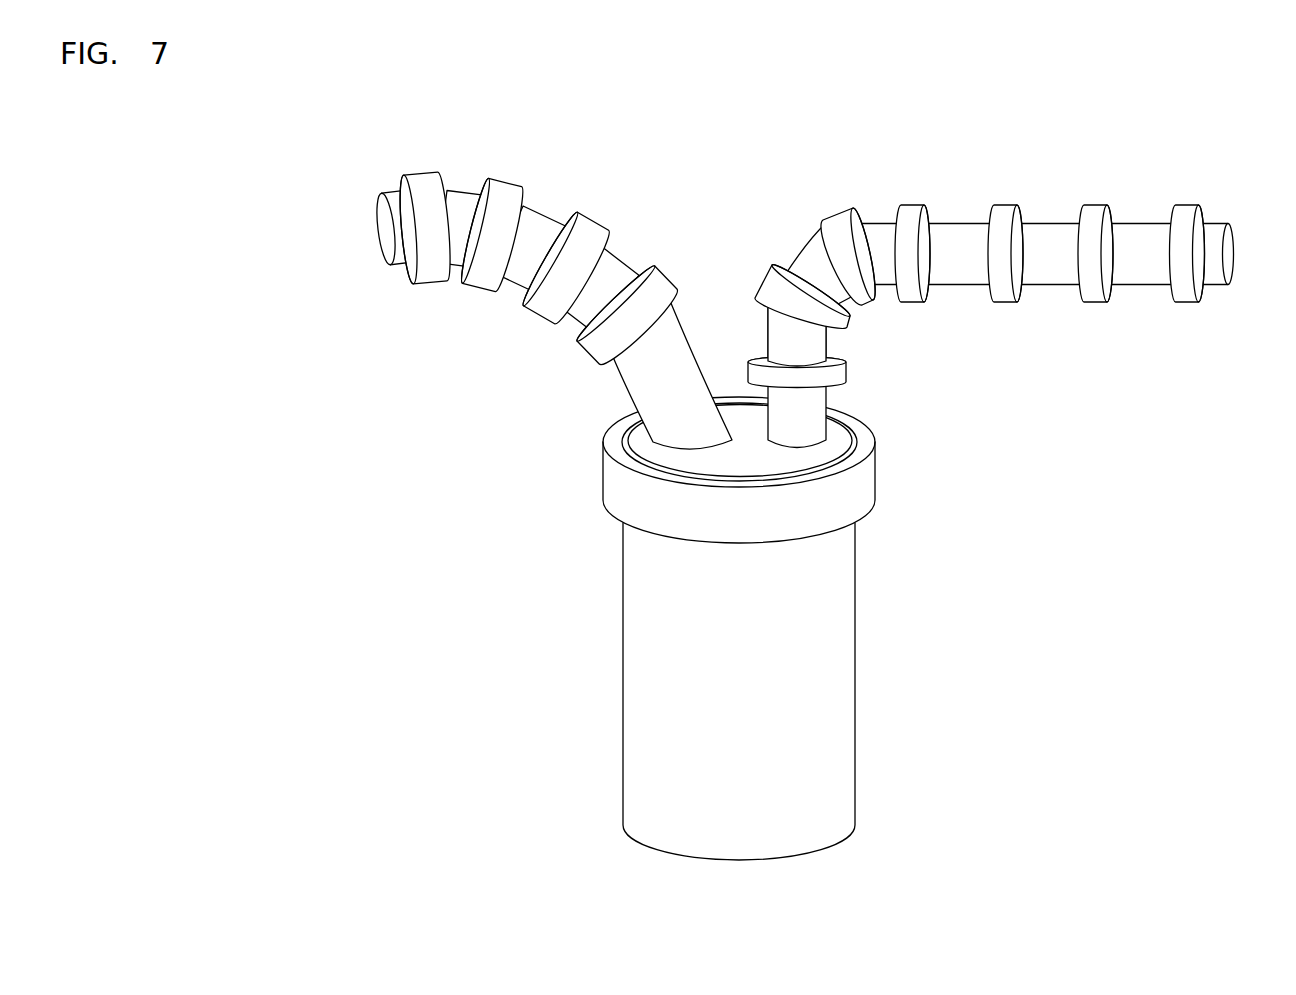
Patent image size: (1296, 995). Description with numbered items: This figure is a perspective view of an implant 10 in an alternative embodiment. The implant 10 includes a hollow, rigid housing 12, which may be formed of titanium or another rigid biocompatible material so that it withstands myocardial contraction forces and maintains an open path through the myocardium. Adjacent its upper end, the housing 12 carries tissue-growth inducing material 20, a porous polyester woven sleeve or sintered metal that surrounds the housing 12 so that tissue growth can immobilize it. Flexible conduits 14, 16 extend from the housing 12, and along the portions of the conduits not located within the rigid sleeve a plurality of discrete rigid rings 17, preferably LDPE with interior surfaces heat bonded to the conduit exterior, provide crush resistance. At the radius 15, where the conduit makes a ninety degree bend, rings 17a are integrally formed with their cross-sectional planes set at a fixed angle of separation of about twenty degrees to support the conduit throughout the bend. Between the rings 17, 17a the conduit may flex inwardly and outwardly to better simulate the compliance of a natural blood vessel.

The implant 10 is at (1159, 484).
The housing 12 is at (855, 563).
The flexible conduit 14 is at (1215, 222).
The radius 15 is at (583, 347).
The flexible conduit 16 is at (390, 192).
The rigid rings 17 is at (428, 173).
The rings 17a is at (668, 272).
The tissue-growth inducing material 20 is at (603, 467).